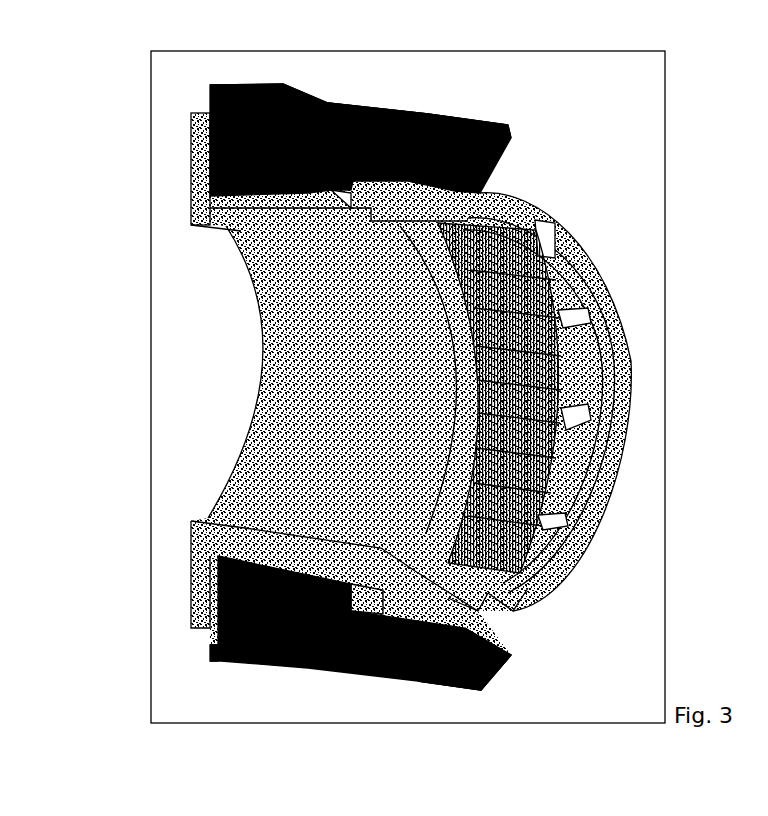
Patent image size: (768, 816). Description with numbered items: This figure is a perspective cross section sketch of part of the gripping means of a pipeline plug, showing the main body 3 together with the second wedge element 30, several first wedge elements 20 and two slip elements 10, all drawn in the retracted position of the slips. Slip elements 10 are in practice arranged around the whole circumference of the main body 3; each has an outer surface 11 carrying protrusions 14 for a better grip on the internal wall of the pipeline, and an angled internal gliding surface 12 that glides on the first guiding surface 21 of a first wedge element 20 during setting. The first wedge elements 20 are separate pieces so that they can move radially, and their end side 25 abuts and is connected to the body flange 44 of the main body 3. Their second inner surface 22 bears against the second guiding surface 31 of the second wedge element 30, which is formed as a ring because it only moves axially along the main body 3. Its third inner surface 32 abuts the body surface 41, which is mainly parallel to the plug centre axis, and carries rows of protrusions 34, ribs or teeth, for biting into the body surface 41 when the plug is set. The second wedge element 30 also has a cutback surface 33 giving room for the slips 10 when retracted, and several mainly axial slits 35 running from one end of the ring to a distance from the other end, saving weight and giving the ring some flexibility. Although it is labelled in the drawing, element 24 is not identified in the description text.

The main body 3 is at (277, 300).
The slip element 10 is at (443, 108).
The outer surface 11 is at (380, 674).
The internal gliding surface 12 is at (430, 673).
The protrusions 14 is at (390, 103).
The first wedge element 20 is at (297, 88).
The first guiding surface 21 is at (287, 658).
The second inner surface 22 is at (253, 662).
The end ring 24 is at (533, 245).
The end side 25 is at (213, 657).
The second wedge element 30 is at (477, 167).
The second guiding surface 31 is at (470, 603).
The third inner surface 32 is at (520, 505).
The cutback surface 33 is at (457, 602).
The protrusions 34 is at (553, 370).
The slits 35 is at (580, 313).
The body surface 41 is at (305, 545).
The body flange 44 is at (190, 158).